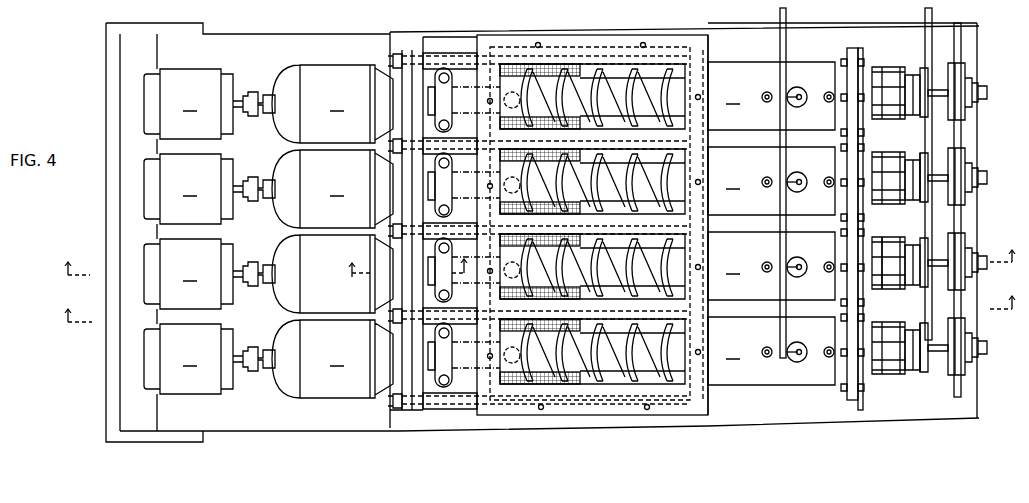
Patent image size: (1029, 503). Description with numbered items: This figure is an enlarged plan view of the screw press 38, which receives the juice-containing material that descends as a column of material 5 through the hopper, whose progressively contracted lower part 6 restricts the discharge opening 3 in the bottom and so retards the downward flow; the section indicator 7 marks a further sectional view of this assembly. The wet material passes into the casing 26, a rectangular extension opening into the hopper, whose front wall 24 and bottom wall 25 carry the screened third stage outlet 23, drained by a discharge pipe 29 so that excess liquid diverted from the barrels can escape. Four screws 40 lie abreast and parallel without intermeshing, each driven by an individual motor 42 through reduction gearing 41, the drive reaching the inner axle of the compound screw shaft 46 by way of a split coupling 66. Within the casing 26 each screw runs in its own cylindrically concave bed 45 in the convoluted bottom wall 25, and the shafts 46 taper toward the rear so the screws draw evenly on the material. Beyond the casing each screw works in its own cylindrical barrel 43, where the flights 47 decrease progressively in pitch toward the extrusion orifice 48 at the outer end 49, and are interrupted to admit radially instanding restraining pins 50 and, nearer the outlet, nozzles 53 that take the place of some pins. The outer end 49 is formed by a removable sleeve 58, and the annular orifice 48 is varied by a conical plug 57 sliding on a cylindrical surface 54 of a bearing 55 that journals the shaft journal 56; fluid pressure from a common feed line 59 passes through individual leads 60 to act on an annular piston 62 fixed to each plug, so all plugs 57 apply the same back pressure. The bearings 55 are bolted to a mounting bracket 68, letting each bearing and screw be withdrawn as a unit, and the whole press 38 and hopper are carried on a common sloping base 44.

The discharge opening 3 is at (670, 60).
The column of material 5 is at (536, 315).
The lower part of hopper 6 is at (407, 273).
The section line 7- 7 is at (536, 143).
The third stage outlet 23 is at (500, 378).
The front wall of casing 24 is at (500, 210).
The bottom wall of casing 25 is at (594, 360).
The casing 26 is at (712, 53).
The discharge pipe 29 is at (516, 349).
The screw press 38 is at (806, 60).
The screw 40 is at (605, 378).
The reduction gearing 41 is at (325, 231).
The motor 42 is at (201, 231).
The cylindrical barrel 43 is at (771, 223).
The sloping base 44 is at (751, 425).
The concave bed 45 is at (625, 383).
The screw shaft 46 is at (574, 360).
The screw flights 47 is at (524, 343).
The extrusion orifice 48 is at (873, 320).
The outer end of barrel 49 is at (862, 385).
The restraining pins 50 is at (829, 346).
The nozzle 53 is at (798, 341).
The cylindrical surface 54 is at (893, 366).
The bearing 55 is at (897, 194).
The journal 56 is at (538, 29).
The conical plug 57 is at (876, 323).
The removable sleeve 58 is at (866, 370).
The common feed line 59 is at (933, 14).
The individual lead 60 is at (939, 345).
The annular piston 62 is at (910, 325).
The split coupling 66 is at (450, 356).
The mounting bracket 68 is at (962, 55).